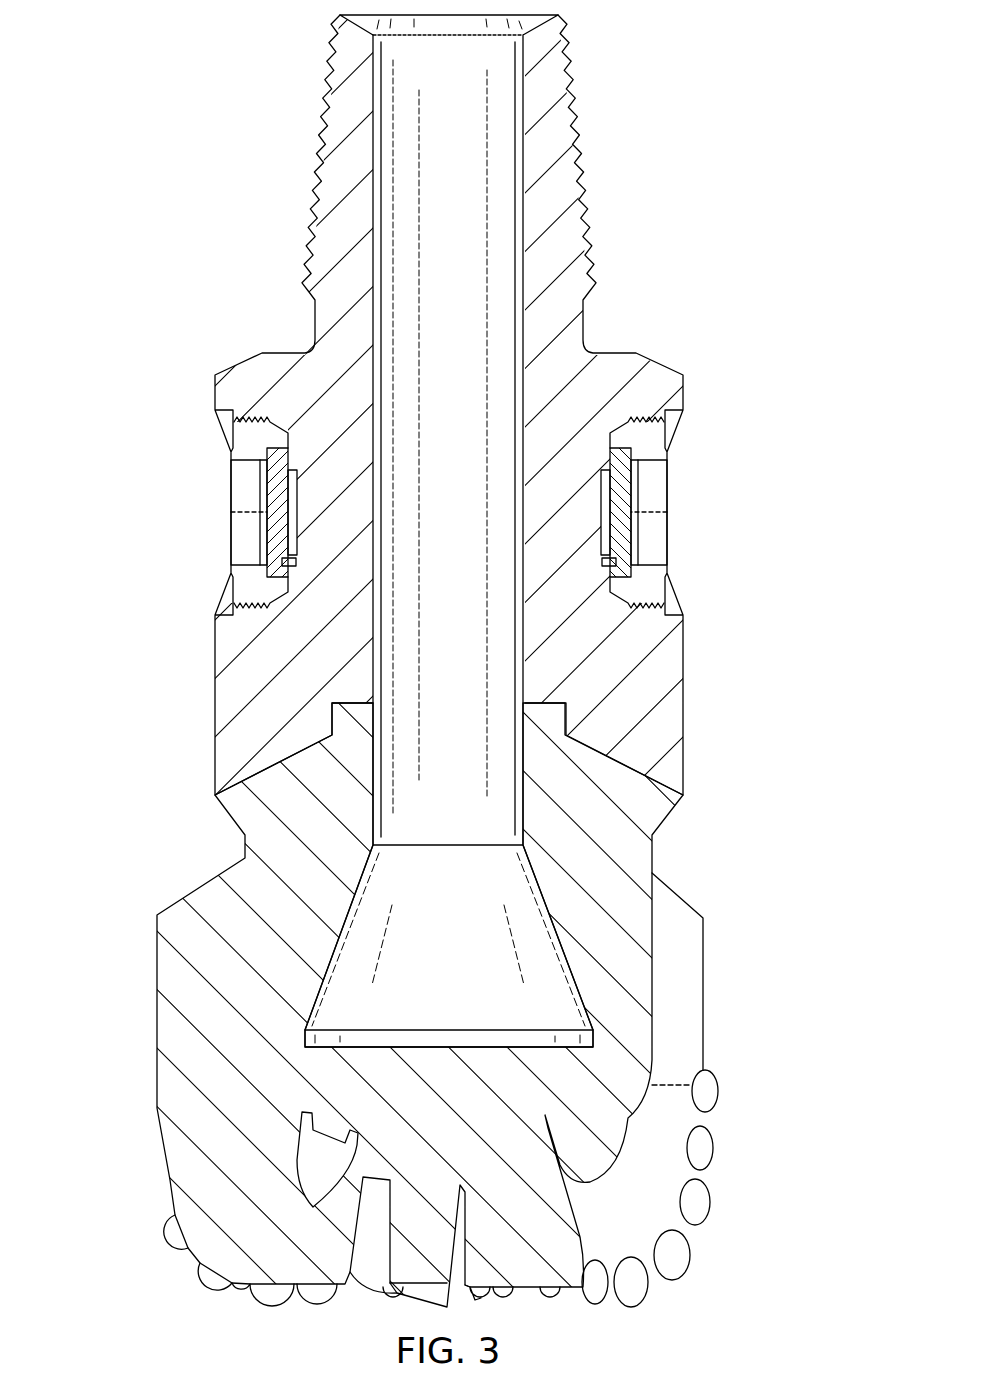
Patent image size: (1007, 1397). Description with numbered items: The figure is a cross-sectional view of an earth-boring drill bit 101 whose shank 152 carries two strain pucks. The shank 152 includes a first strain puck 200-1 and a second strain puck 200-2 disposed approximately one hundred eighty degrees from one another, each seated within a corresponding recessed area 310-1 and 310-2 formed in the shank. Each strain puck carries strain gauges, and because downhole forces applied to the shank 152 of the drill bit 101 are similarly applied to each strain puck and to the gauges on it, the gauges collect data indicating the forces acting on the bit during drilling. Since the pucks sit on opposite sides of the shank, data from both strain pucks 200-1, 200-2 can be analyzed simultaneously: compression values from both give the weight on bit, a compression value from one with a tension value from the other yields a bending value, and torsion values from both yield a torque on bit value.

The earth-boring drill bit 101 is at (176, 181).
The shank 152 is at (621, 364).
The strain puck 200-1 is at (280, 526).
The strain puck 200-2 is at (621, 493).
The recessed area 310-1 is at (117, 406).
The recessed area 310-2 is at (781, 406).